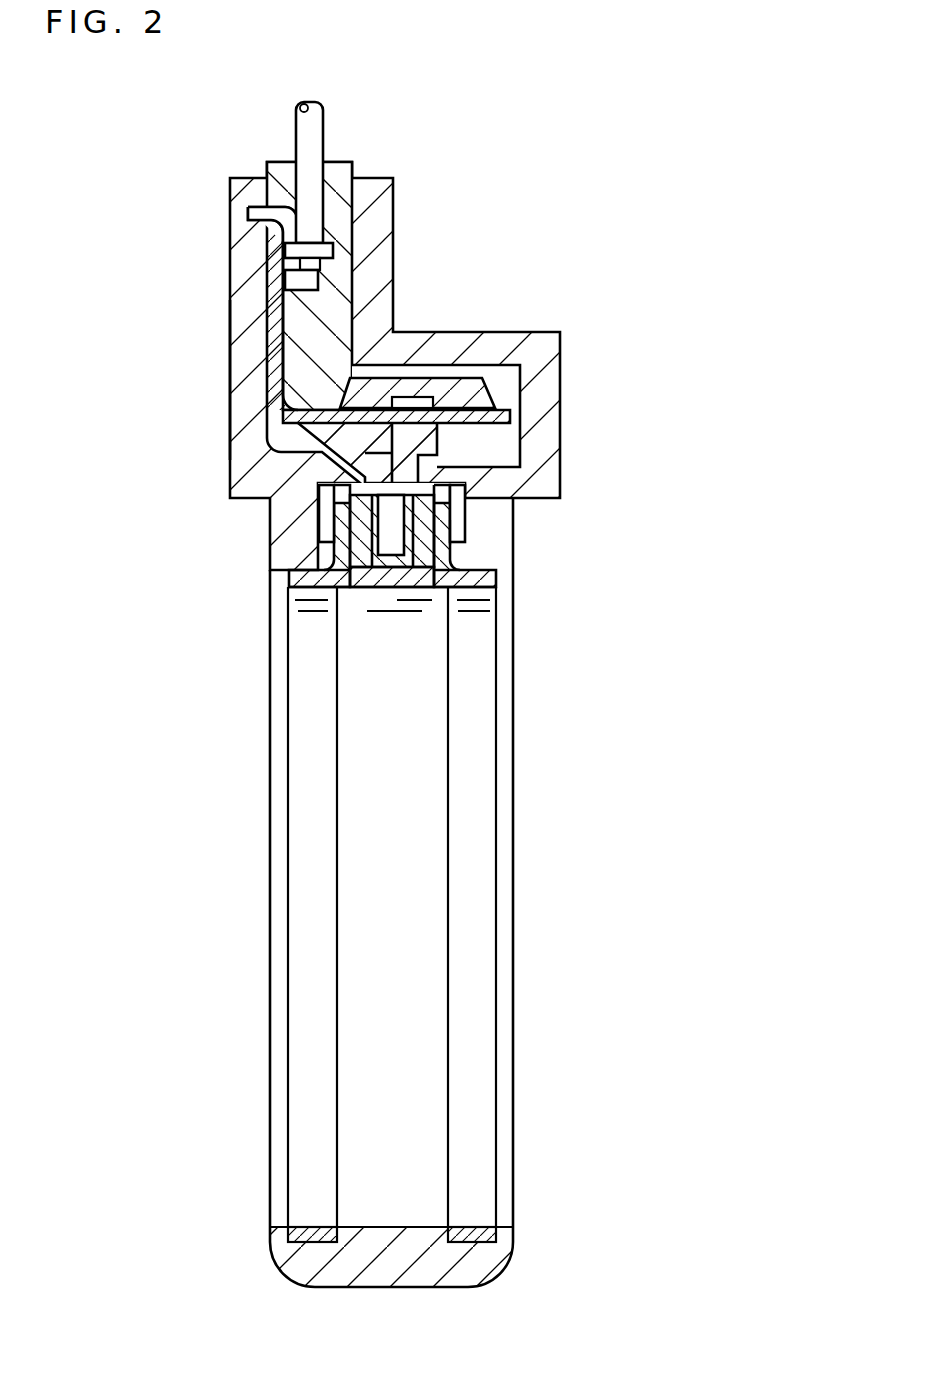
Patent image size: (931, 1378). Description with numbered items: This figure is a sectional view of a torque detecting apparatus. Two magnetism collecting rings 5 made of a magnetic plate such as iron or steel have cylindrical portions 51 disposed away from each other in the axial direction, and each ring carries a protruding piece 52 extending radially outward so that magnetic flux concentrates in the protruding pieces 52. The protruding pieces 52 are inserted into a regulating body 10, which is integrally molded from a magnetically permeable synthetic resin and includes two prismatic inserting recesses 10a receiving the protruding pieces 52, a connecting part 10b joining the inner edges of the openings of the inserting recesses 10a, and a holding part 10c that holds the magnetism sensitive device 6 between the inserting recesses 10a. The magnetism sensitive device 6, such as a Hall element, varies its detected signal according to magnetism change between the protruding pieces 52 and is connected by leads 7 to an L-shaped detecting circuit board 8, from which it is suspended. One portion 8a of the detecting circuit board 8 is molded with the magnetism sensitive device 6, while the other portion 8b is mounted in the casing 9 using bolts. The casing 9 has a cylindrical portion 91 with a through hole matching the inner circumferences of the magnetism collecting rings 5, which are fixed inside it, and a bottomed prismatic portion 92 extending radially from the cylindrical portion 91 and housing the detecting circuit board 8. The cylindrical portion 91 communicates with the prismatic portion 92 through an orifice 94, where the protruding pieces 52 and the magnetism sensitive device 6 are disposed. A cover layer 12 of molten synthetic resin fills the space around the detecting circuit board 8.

The magnetism collecting ring 5 is at (270, 580).
The magnetism sensitive device 6 is at (397, 575).
The leads 7 is at (397, 438).
The detecting circuit board 8 is at (462, 408).
The one portion of detecting circuit board 8a is at (505, 413).
The other portion of detecting circuit board 8b is at (292, 313).
The casing 9 is at (568, 372).
The regulating body 10 is at (415, 578).
The inserting recess 10a is at (318, 530).
The connecting part 10b is at (372, 590).
The holding part 10c is at (410, 588).
The cover layer 12 is at (345, 291).
The cylindrical portion 51 is at (290, 1232).
The protruding piece 52 is at (330, 512).
The cylindrical portion 91 is at (430, 1287).
The prismatic portion 92 is at (230, 373).
The orifice 94 is at (447, 535).